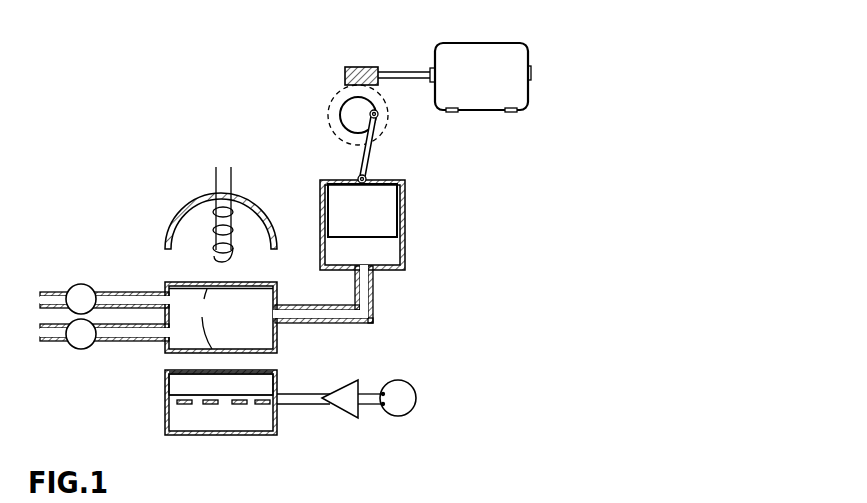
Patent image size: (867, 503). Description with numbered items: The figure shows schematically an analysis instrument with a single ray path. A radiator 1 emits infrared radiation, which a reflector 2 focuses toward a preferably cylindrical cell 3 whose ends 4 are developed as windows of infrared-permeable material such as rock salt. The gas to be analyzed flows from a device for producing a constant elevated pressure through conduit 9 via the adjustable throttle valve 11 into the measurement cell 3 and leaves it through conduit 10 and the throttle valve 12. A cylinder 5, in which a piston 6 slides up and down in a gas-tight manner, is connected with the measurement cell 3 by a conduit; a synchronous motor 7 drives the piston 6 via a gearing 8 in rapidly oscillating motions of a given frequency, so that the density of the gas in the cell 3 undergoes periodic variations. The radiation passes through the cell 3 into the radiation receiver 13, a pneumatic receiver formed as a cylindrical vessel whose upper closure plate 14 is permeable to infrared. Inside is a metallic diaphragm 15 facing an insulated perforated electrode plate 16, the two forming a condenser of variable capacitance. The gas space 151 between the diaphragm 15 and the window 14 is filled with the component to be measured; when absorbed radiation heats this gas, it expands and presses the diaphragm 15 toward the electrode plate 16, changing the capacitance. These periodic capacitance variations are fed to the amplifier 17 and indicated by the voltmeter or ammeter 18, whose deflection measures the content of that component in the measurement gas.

The radiator 1 is at (230, 215).
The reflector 2 is at (265, 222).
The cell 3 is at (263, 335).
The ends 4 is at (205, 319).
The cylinder 5 is at (392, 253).
The piston 6 is at (388, 217).
The synchronous motor 7 is at (487, 52).
The gearing 8 is at (378, 85).
The conduit 9 is at (127, 292).
The conduit 10 is at (128, 341).
The adjustable throttle valve 11 is at (72, 285).
The throttle valve 12 is at (72, 348).
The radiation receiver 13 is at (247, 423).
The upper closure plate 14 is at (200, 375).
The metallic diaphragm 15 is at (255, 393).
The gas space 151 is at (175, 385).
The perforated electrode plate 16 is at (208, 405).
The amplifier 17 is at (342, 413).
The voltmeter or ammeter 18 is at (413, 383).